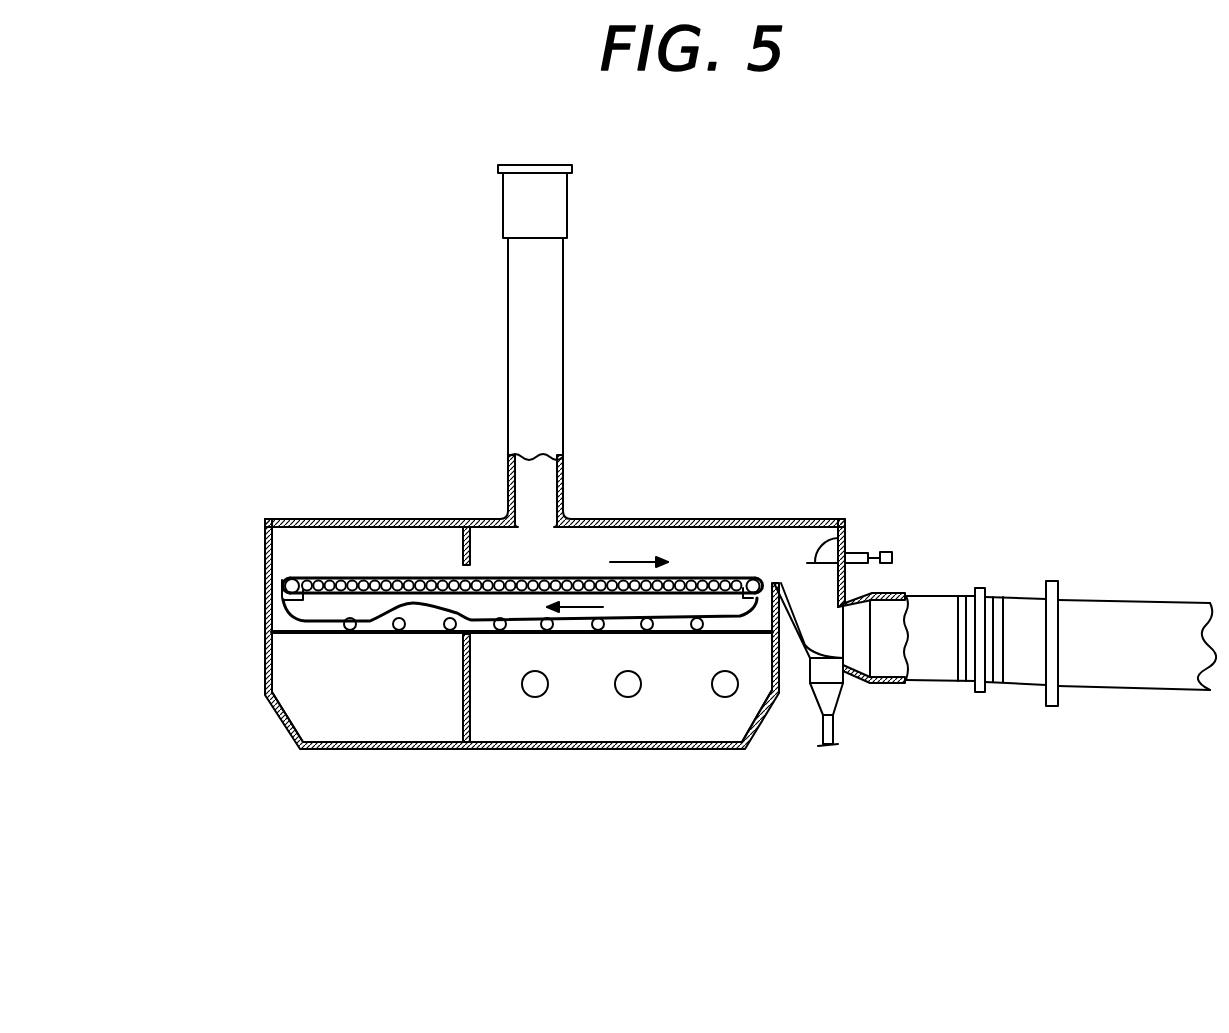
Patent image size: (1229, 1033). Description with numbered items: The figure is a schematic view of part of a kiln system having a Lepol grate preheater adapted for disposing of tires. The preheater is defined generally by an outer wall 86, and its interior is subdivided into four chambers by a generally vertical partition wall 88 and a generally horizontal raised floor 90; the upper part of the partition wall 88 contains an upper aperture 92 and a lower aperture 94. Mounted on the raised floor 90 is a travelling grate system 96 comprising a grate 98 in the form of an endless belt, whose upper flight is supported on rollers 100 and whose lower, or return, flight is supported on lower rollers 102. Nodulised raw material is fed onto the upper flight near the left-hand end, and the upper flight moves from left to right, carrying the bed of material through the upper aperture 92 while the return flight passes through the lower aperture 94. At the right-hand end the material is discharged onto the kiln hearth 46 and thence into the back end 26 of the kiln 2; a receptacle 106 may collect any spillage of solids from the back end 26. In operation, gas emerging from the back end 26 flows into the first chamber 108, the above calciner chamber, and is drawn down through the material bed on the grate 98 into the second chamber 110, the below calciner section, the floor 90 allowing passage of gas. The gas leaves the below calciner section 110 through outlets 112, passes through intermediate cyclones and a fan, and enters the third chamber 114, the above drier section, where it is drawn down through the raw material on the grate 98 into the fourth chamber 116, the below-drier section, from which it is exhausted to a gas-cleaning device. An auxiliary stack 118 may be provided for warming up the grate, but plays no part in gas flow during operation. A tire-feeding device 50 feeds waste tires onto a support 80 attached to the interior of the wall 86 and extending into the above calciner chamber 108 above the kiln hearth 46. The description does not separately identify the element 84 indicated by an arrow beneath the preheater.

The kiln 2 is at (1120, 610).
The back end of the kiln 26 is at (928, 660).
The kiln hearth 46 is at (854, 700).
The tire-feeding device 50 is at (893, 557).
The support 80 is at (847, 528).
The separator assembly 84 is at (678, 520).
The outer wall 86 is at (555, 628).
The partition wall 88 is at (474, 702).
The raised floor 90 is at (303, 637).
The upper aperture 92 is at (460, 567).
The lower aperture 94 is at (373, 625).
The travelling grate system 96 is at (783, 523).
The grate 98 is at (300, 616).
The rollers 100 is at (348, 578).
The lower rollers 102 is at (697, 631).
The receptacle 106 is at (845, 698).
The first chamber 108 is at (698, 535).
The second chamber 110 is at (706, 705).
The outlets 112 is at (628, 697).
The third chamber 114 is at (285, 553).
The fourth chamber 116 is at (378, 677).
The auxiliary stack 118 is at (542, 273).